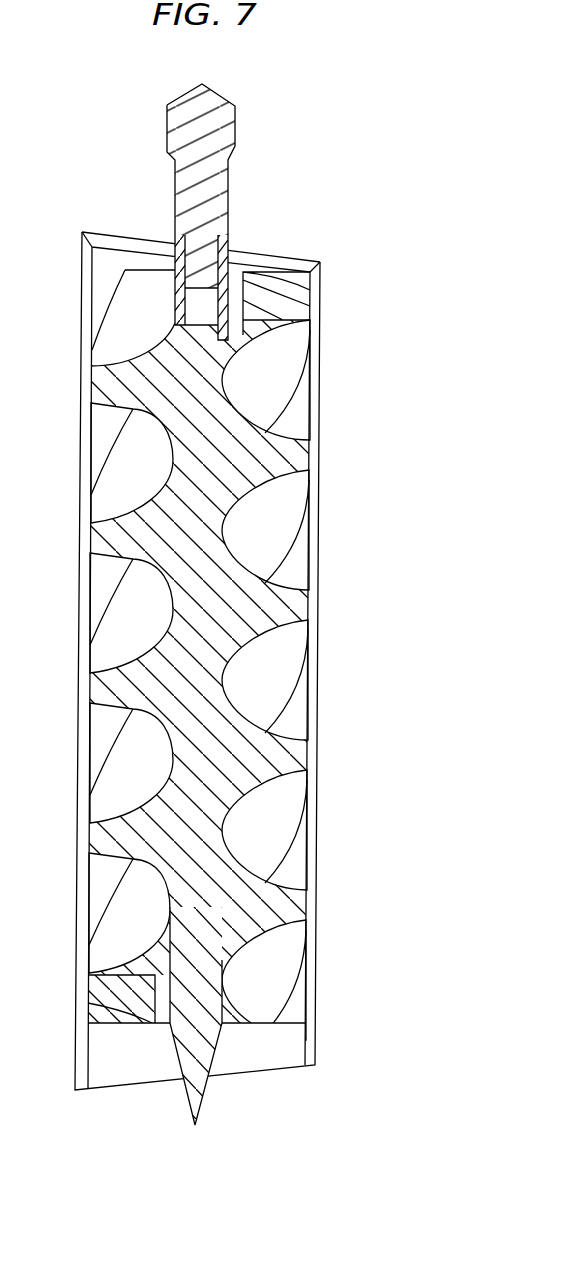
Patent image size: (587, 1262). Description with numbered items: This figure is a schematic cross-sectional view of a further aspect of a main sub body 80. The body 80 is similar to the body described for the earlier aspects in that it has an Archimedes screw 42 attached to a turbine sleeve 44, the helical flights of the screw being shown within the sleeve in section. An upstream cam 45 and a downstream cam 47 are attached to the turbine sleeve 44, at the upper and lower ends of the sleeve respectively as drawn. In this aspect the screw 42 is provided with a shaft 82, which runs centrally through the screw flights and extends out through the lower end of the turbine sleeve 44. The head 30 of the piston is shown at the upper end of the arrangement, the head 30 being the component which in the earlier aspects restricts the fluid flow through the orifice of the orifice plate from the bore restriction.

The head 30 is at (228, 132).
The Archimedes screw 42 is at (298, 463).
The turbine sleeve 44 is at (322, 522).
The upstream cam 45 is at (282, 263).
The downstream cam 47 is at (270, 1070).
The main sub body 80 is at (270, 604).
The shaft 82 is at (202, 993).